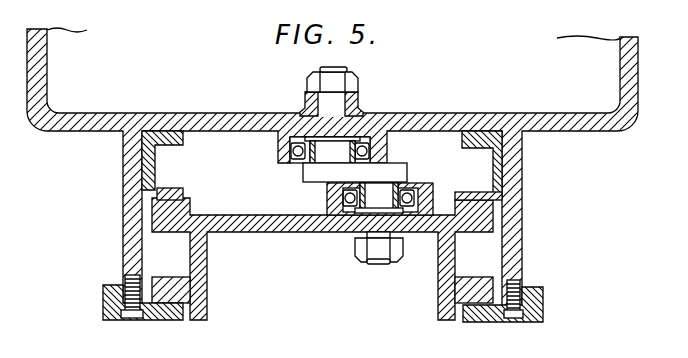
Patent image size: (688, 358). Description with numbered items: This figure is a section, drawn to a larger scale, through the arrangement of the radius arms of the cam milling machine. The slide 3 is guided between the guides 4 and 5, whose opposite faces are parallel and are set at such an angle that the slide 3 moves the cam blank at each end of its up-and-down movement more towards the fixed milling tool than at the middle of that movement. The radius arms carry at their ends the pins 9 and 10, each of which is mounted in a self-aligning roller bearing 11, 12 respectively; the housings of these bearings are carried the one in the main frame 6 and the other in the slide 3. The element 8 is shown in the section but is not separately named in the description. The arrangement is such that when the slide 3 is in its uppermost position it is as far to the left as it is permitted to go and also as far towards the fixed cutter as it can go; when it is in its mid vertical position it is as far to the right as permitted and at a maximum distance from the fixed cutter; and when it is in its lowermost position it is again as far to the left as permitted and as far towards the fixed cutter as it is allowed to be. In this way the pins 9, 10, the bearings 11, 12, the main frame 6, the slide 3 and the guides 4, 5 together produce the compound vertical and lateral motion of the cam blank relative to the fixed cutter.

The slide 3 is at (271, 232).
The guide 4 is at (502, 192).
The guide 5 is at (178, 192).
The main frame 6 is at (238, 113).
The shaft 8 is at (327, 173).
The pin 9 is at (380, 187).
The pin 10 is at (328, 158).
The self-aligning roller bearing 11 is at (433, 192).
The self-aligning roller bearing 12 is at (292, 150).